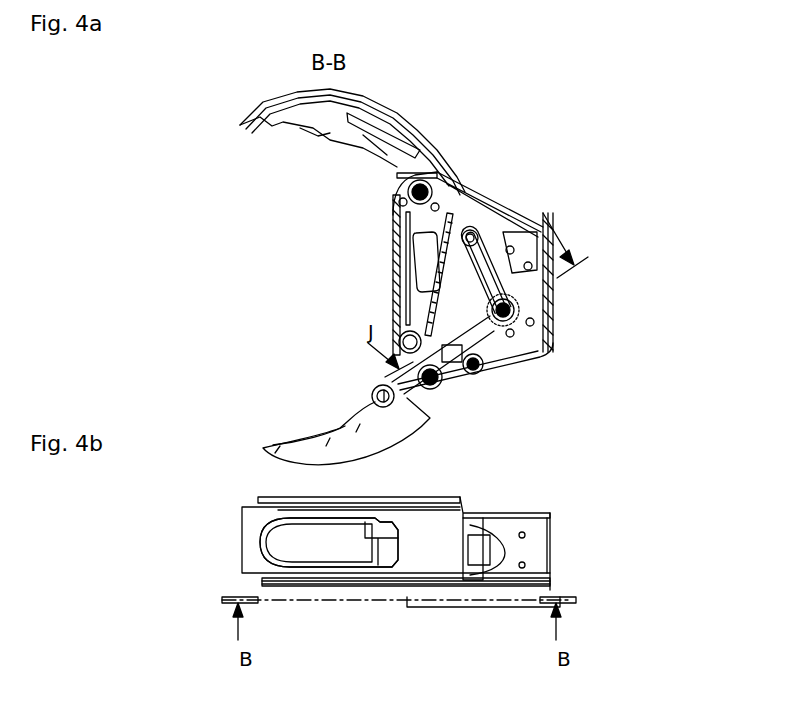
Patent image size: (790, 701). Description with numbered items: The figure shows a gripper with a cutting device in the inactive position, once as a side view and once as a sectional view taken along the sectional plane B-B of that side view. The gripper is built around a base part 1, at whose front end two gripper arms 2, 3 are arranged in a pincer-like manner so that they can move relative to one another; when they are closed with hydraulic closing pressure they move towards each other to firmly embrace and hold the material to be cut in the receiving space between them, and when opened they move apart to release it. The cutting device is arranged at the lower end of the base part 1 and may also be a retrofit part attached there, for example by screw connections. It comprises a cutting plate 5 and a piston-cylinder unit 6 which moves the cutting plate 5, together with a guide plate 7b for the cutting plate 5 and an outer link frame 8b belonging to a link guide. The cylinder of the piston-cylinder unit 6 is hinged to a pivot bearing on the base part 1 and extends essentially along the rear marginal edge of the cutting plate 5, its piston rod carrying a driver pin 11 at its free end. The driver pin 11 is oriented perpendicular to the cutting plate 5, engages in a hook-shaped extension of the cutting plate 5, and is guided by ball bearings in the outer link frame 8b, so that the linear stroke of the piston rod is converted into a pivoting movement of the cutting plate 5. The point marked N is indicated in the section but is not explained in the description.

In FIG. 4b, the base part 1 is at (583, 533).
In FIG. 4a, the gripper arm 2 is at (328, 440).
In FIG. 4a, the gripper arm 3 is at (405, 117).
In FIG. 4b, the gripper arm 3 is at (245, 547).
In FIG. 4a, the cutting plate 5 is at (452, 312).
In FIG. 4a, the piston-cylinder unit 6 is at (477, 333).
In FIG. 4a, the guide plate 7b is at (462, 205).
In FIG. 4a, the outer link frame 8b is at (472, 240).
In FIG. 4a, the driver pin 11 is at (497, 313).
In FIG. 4a, the pivot point N is at (527, 311).